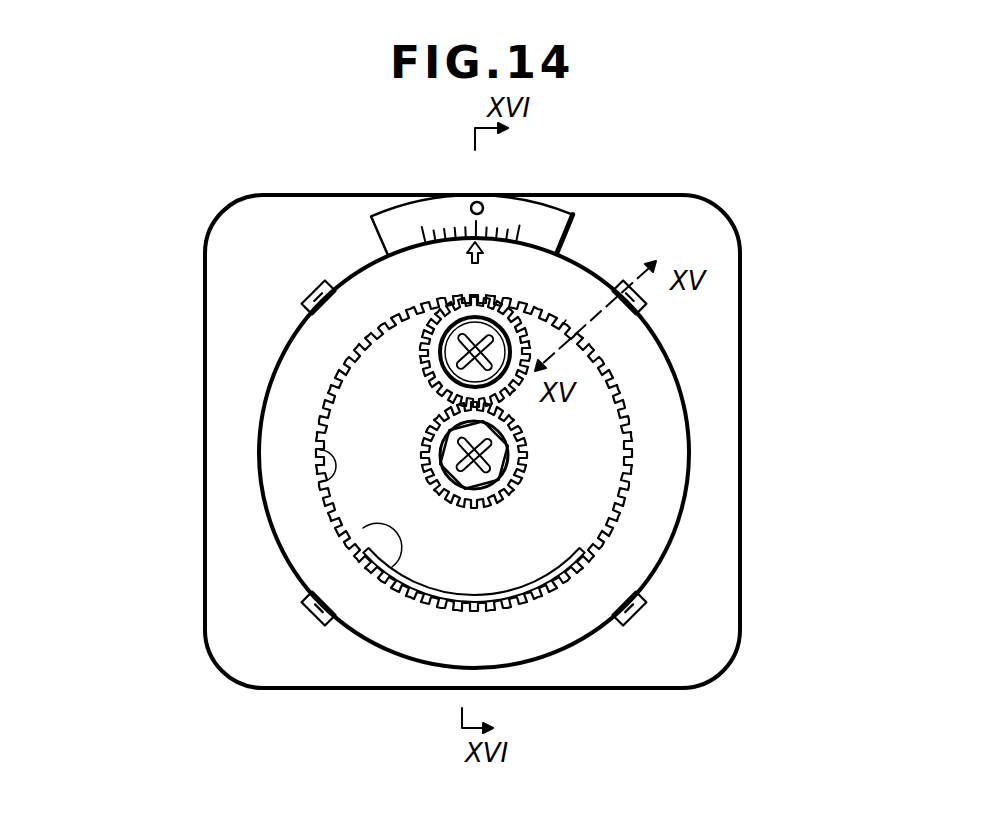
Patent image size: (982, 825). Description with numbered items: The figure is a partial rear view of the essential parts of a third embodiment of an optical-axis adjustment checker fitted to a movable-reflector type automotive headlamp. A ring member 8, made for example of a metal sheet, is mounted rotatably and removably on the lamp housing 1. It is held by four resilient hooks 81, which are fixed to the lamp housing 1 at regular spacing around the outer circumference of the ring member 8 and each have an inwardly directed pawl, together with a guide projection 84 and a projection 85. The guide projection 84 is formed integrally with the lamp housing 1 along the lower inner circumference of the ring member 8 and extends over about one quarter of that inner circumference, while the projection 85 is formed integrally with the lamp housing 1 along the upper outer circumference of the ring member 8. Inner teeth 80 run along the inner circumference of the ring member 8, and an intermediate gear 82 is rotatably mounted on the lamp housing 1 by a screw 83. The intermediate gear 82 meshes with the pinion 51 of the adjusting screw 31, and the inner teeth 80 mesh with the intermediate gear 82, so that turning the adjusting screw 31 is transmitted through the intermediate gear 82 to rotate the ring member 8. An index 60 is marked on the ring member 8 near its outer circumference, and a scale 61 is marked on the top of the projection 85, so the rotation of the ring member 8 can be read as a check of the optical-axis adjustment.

The lamp housing 1 is at (200, 350).
The ring member 8 is at (250, 437).
The adjusting screw 31 is at (490, 486).
The pinion 51 is at (518, 478).
The index 60 is at (468, 246).
The scale 61 is at (475, 224).
The inner teeth 80 is at (320, 452).
The resilient hooks 81 is at (312, 293).
The intermediate gear 82 is at (530, 350).
The screw 83 is at (530, 306).
The guide projection 84 is at (363, 528).
The projection 85 is at (543, 218).